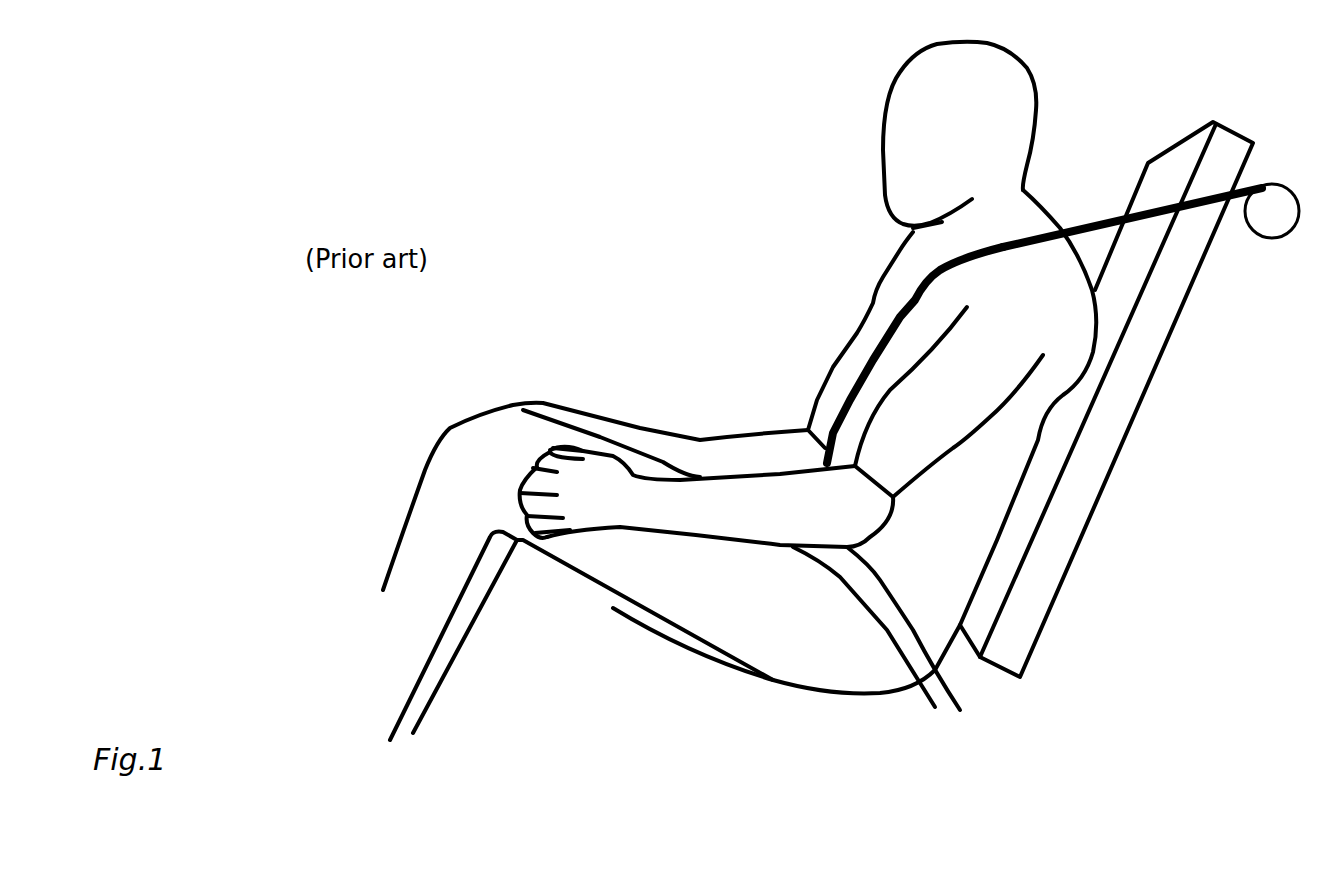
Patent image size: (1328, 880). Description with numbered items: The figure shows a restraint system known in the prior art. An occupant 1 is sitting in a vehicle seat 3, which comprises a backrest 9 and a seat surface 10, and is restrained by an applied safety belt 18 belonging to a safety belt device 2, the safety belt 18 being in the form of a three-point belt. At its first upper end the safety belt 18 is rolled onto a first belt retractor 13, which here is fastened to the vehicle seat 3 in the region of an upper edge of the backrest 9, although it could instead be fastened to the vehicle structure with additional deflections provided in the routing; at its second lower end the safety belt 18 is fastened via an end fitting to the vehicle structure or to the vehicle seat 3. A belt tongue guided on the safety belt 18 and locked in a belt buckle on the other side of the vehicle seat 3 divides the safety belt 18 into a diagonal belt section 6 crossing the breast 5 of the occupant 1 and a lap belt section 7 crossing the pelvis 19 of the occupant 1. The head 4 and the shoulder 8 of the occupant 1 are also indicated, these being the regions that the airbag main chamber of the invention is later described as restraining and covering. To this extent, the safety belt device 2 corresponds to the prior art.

The occupant 1 is at (800, 198).
The safety belt device 2 is at (1081, 206).
The vehicle seat 3 is at (1145, 463).
The head 4 is at (930, 118).
The breast 5 is at (858, 345).
The diagonal belt section 6 is at (900, 315).
The lap belt section 7 is at (885, 608).
The shoulder 8 is at (1043, 272).
The backrest 9 is at (1072, 520).
The seat surface 10 is at (777, 683).
The first belt retractor 13 is at (1266, 188).
The safety belt 18 is at (1147, 225).
The pelvis 19 is at (921, 627).